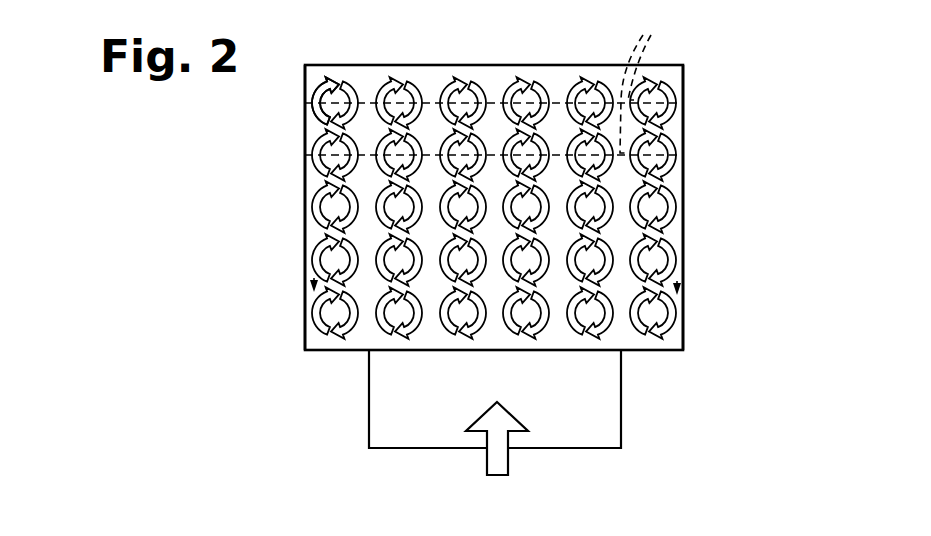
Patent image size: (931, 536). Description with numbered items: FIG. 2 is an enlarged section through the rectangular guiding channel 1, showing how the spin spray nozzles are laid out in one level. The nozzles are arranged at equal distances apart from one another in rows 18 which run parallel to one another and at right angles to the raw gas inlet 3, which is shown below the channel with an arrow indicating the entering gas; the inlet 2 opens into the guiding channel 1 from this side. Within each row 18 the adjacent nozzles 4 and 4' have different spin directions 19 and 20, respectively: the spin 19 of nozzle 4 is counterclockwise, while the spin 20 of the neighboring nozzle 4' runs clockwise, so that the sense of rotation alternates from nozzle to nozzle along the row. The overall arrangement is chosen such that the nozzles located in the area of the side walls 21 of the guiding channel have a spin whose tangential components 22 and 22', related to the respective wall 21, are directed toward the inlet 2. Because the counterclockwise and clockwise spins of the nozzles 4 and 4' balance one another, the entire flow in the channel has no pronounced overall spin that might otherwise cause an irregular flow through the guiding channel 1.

The guiding channel 1 is at (683, 181).
The inlet 2 is at (606, 407).
The raw gas inlet 3 is at (494, 460).
The spin spray nozzle 4 is at (303, 103).
The spin spray nozzle 4' is at (402, 71).
The row 18 is at (641, 82).
The spin direction 19 is at (338, 95).
The spin direction 20 is at (417, 107).
The side wall 21 is at (308, 211).
The tangential component 22 is at (274, 276).
The tangential component 22' is at (720, 278).